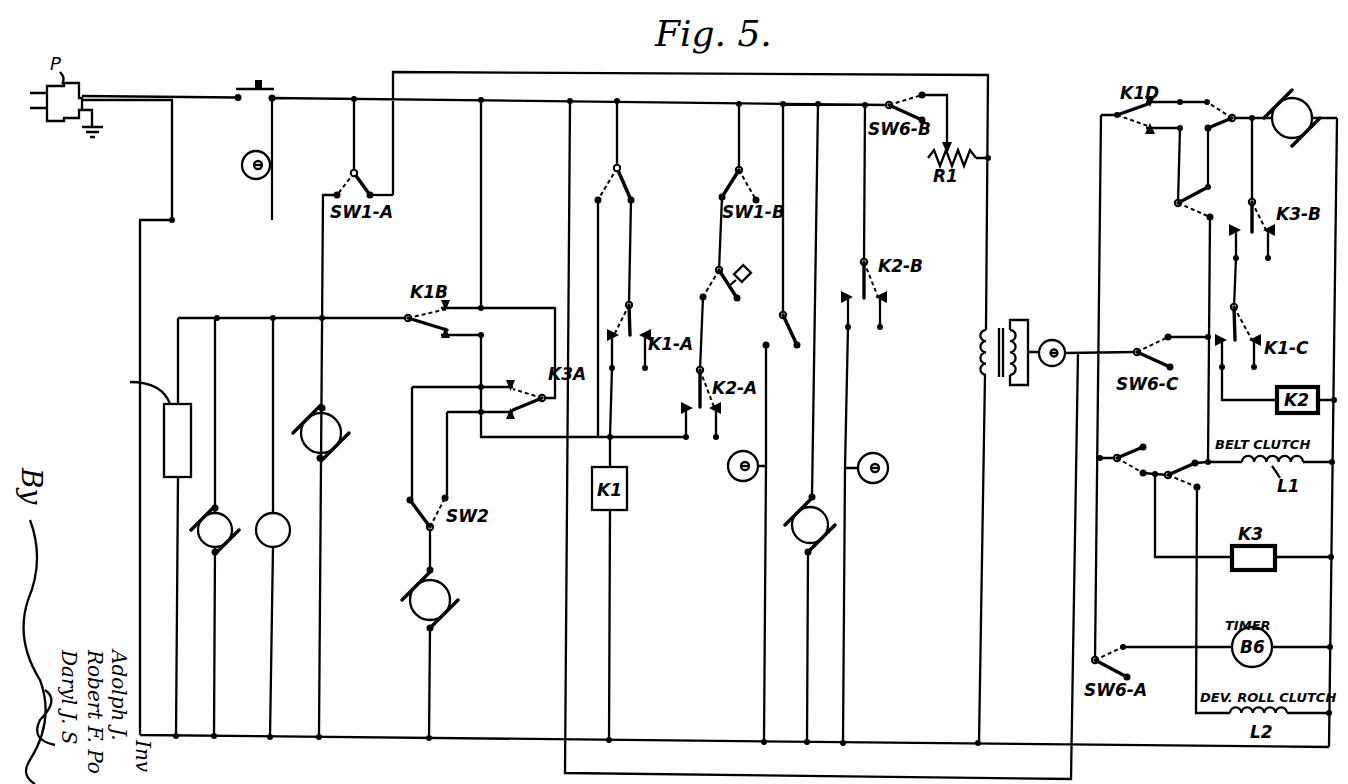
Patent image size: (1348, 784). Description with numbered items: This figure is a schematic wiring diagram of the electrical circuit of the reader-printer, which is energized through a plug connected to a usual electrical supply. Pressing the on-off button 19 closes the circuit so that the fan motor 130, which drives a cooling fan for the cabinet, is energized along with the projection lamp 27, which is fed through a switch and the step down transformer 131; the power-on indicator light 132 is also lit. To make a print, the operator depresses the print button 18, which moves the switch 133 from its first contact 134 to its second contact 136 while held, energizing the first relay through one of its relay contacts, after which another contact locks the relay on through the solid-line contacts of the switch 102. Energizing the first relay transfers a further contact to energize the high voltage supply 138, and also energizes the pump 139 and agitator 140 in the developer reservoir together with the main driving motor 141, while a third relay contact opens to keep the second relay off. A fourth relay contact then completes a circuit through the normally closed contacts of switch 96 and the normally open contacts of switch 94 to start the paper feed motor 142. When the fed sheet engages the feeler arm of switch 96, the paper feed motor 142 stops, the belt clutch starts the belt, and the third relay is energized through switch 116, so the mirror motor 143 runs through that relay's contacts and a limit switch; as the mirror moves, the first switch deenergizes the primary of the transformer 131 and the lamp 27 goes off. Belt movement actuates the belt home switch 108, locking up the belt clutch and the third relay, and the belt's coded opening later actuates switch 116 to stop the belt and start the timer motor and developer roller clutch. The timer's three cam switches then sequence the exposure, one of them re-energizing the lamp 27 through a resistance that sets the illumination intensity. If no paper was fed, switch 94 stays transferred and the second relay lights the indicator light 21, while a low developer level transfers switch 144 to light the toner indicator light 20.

The on-off button 19 is at (259, 80).
The power-on indicator light 132 is at (252, 152).
The main driving motor 141 is at (328, 422).
The mirror motor 143 is at (447, 598).
The high voltage supply 138 is at (164, 444).
The pump 139 is at (218, 553).
The agitator 140 is at (280, 548).
The switch 102 is at (622, 170).
The second contact 136 is at (703, 297).
The switch 133 is at (726, 287).
The first contact 134 is at (742, 298).
The print button 18 is at (749, 267).
The switch 144 is at (781, 317).
The toner indicator light 20 is at (739, 478).
The indicator light 21 is at (882, 458).
The fan motor 130 is at (800, 538).
The step down transformer 131 is at (1002, 324).
The projection lamp 27 is at (1052, 366).
The switch 94 is at (1232, 124).
The switch 96 is at (1177, 208).
The paper feed motor 142 is at (1280, 140).
The belt home switch 108 is at (1124, 450).
The switch 116 is at (1199, 485).